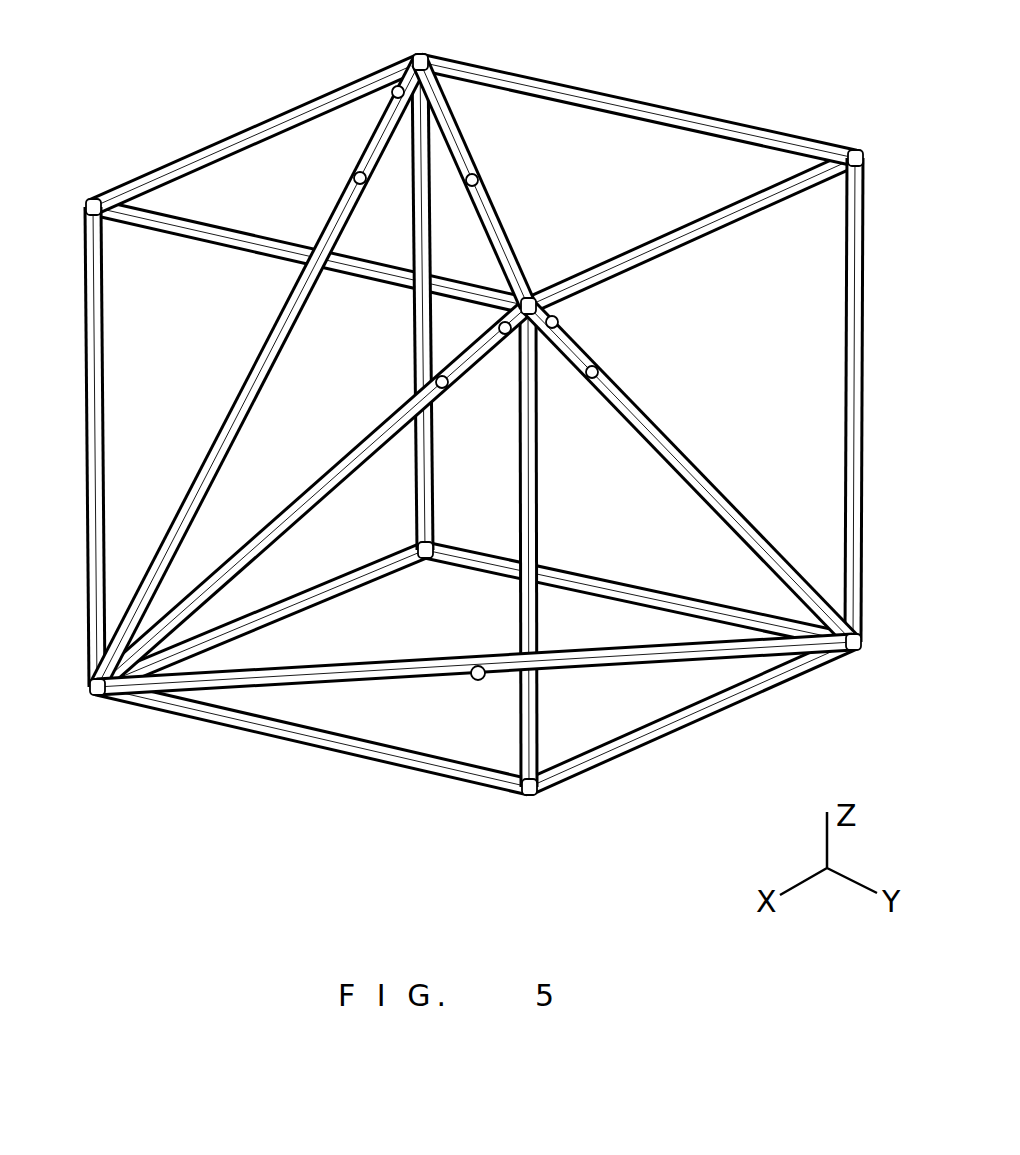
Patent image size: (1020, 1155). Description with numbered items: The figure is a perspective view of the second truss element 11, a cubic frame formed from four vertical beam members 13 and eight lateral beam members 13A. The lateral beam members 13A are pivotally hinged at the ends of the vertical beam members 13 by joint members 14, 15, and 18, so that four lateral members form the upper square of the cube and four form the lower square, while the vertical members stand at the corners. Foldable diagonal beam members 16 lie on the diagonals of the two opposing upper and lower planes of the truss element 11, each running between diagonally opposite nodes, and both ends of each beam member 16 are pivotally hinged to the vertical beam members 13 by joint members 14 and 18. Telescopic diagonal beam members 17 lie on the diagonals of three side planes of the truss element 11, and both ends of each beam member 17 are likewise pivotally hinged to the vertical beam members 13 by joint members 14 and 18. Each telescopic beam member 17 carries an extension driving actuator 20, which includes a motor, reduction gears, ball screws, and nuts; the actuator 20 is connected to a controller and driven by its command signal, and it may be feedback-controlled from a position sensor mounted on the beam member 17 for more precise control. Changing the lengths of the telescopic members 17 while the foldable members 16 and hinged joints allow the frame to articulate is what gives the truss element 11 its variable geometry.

The second truss element 11 is at (574, 74).
The vertical beam member 13 is at (82, 434).
The lateral beam member 13A is at (270, 118).
The joint member 14 is at (520, 336).
The joint member 15 is at (85, 204).
The foldable diagonal beam member 16 is at (516, 248).
The telescopic diagonal beam member 17 is at (240, 392).
The joint member 18 is at (426, 58).
The extension driving actuator 20 is at (388, 106).